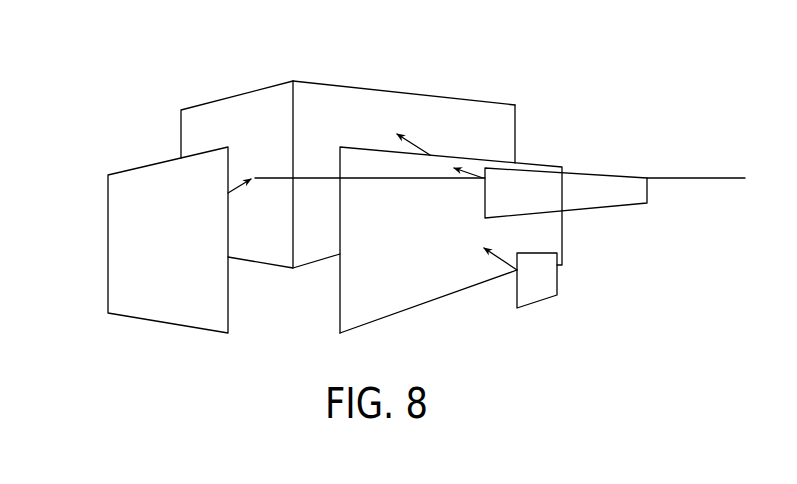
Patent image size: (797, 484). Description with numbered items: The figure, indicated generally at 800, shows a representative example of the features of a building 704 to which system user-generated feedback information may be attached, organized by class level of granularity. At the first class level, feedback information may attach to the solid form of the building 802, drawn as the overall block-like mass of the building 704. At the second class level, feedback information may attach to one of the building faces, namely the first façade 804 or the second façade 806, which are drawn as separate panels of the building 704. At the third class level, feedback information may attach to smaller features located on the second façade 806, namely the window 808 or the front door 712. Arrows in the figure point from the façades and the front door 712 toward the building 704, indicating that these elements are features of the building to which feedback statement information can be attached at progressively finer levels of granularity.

The features of building to which feedback information may attach 800 is at (566, 71).
The building 704 is at (177, 99).
The solid form of the building 802 is at (465, 98).
The façade 1 804 is at (108, 248).
The façade 2 806 is at (417, 312).
The window 808 is at (596, 174).
The front door 712 is at (557, 272).